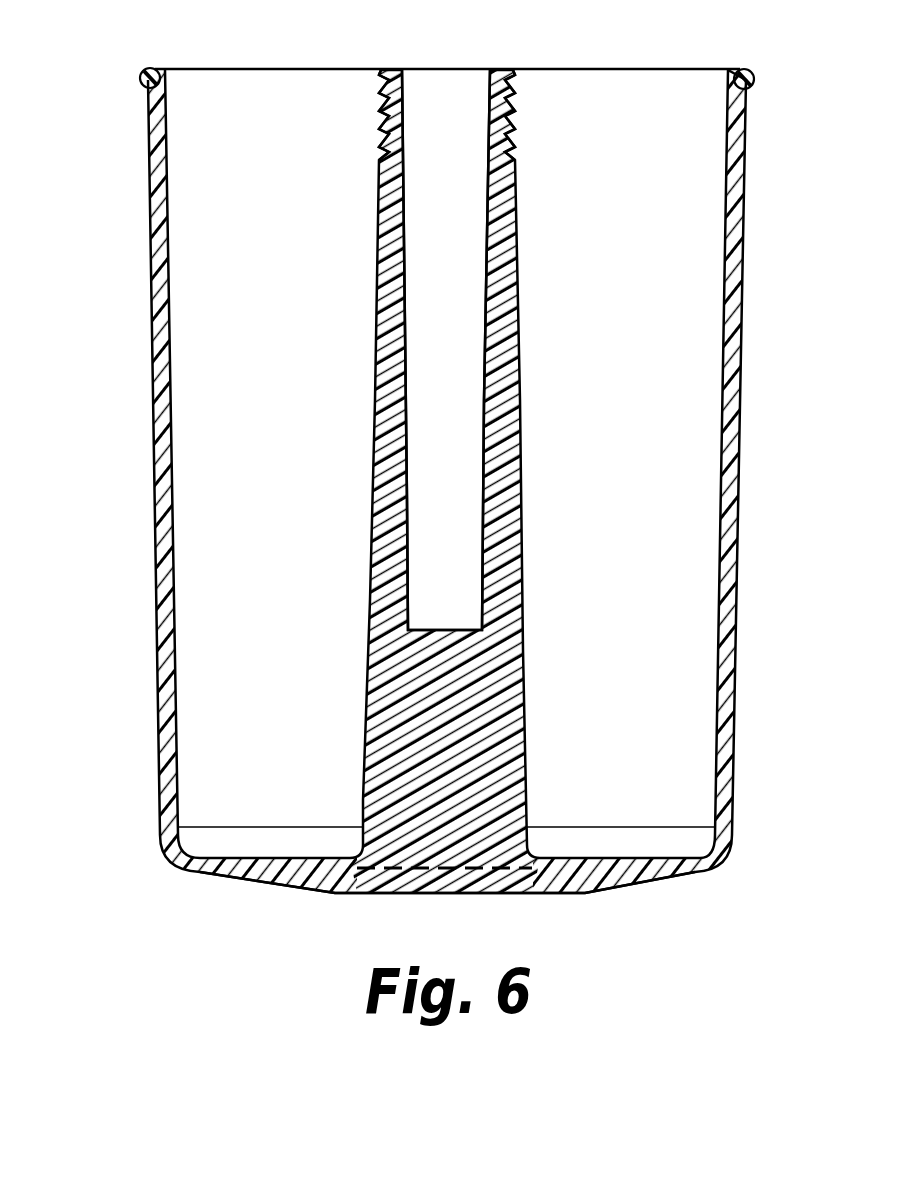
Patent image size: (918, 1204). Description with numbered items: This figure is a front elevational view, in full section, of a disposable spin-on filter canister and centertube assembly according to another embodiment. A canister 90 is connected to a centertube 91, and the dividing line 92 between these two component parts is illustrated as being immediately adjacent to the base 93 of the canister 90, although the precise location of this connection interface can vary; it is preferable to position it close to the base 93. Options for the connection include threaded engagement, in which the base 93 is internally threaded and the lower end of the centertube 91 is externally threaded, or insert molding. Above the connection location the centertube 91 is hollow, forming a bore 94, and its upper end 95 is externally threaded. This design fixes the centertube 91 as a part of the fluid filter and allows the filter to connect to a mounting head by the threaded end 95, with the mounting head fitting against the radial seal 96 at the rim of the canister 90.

The canister 90 is at (725, 497).
The centertube 91 is at (387, 505).
The dividing line 92 is at (452, 870).
The base 93 is at (307, 890).
The central bore 94 is at (445, 433).
The upper end 95 is at (397, 112).
The radial seal 96 is at (138, 78).